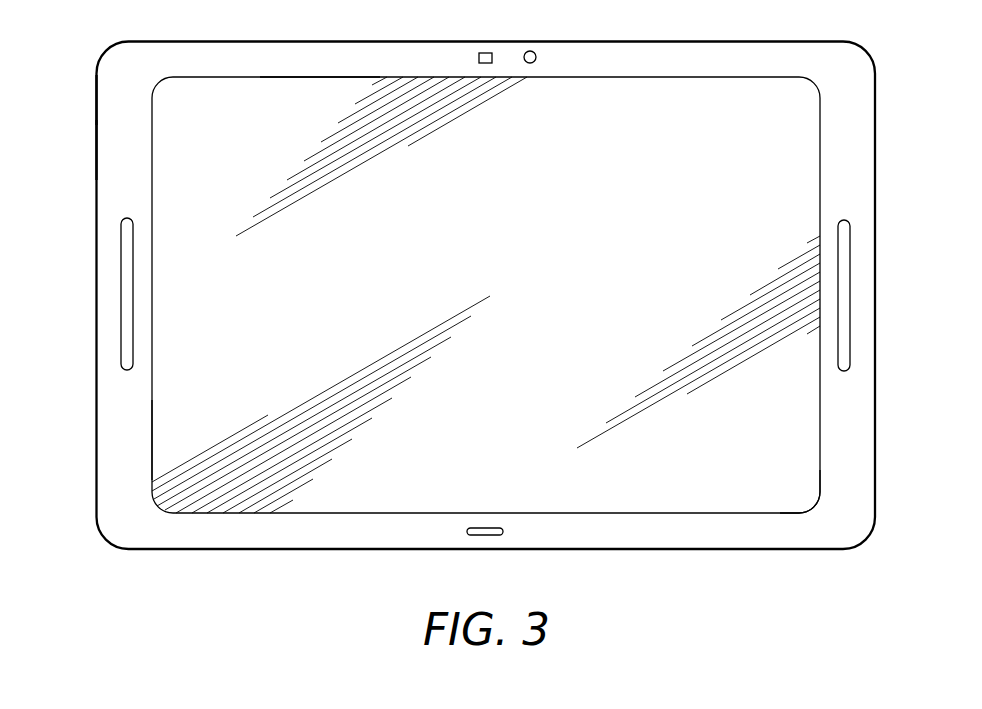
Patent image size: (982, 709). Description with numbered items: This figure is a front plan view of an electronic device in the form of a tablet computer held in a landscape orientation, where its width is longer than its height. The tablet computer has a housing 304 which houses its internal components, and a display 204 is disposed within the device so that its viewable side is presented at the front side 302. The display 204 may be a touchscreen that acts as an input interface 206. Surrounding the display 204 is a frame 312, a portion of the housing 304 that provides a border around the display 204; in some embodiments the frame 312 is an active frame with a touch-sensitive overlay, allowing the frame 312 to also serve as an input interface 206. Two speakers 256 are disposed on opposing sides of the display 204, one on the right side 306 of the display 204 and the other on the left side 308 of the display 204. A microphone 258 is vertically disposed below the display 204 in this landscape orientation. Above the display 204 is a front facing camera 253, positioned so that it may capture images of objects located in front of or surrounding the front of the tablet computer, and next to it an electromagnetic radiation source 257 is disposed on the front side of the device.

The display 204 is at (652, 77).
The input interface 206 is at (315, 77).
The front facing camera 253 is at (485, 53).
The electromagnetic radiation source 257 is at (531, 51).
The microphone 258 is at (485, 536).
The speakers 256 is at (121, 292).
The front side 302 is at (107, 402).
The housing 304 is at (97, 148).
The right side 306 is at (819, 478).
The left side 308 is at (152, 452).
The frame 312 is at (107, 98).